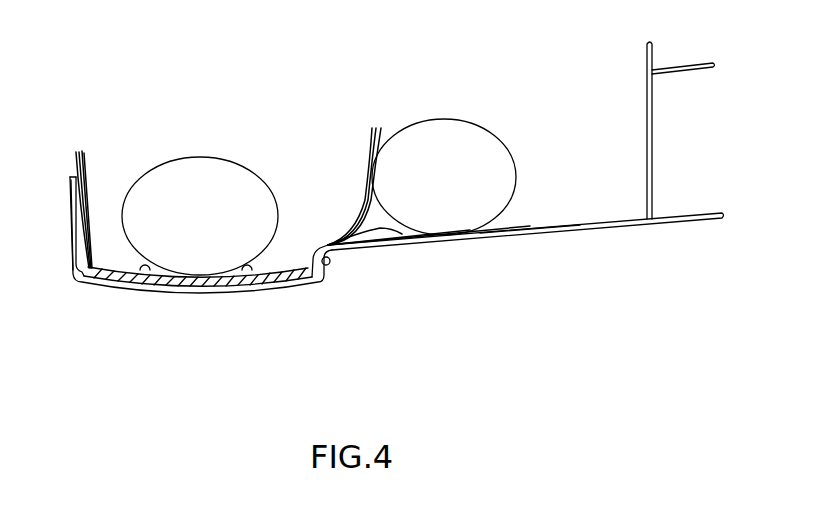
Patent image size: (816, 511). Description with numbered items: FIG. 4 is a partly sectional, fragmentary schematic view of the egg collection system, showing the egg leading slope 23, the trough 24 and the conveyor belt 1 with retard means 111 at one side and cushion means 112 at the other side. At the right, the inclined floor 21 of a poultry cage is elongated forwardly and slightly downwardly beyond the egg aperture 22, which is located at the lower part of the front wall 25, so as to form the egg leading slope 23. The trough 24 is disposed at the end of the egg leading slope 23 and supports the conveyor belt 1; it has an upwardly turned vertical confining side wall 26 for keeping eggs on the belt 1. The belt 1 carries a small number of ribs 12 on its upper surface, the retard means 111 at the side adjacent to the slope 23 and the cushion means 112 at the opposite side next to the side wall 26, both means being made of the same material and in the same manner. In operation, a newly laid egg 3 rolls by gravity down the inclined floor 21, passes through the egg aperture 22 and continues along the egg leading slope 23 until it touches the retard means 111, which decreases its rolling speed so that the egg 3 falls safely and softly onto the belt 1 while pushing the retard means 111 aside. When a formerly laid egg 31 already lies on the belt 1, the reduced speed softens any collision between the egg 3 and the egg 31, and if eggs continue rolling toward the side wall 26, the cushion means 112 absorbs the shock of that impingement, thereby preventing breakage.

The conveyor belt 1 is at (275, 280).
The trough 24 is at (197, 290).
The ribs 12 is at (145, 272).
The side wall 26 is at (70, 215).
The cushion means 112 is at (84, 180).
The egg 31 is at (222, 180).
The retard means 111 is at (362, 195).
The egg 3 is at (443, 133).
The inclined floor 21 is at (700, 221).
The egg leading slope 23 is at (528, 238).
The egg aperture 22 is at (646, 190).
The front wall 25 is at (646, 78).